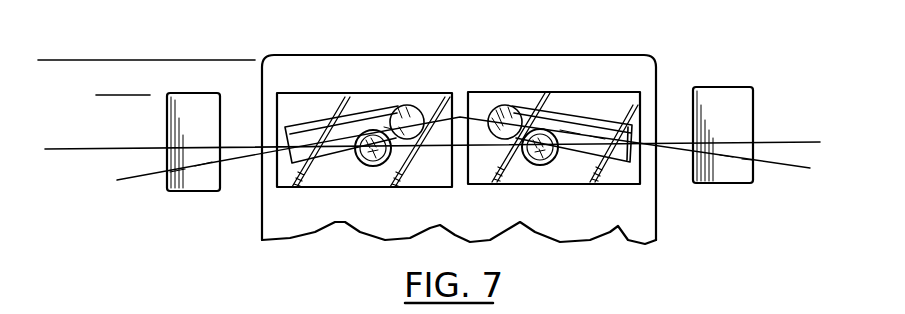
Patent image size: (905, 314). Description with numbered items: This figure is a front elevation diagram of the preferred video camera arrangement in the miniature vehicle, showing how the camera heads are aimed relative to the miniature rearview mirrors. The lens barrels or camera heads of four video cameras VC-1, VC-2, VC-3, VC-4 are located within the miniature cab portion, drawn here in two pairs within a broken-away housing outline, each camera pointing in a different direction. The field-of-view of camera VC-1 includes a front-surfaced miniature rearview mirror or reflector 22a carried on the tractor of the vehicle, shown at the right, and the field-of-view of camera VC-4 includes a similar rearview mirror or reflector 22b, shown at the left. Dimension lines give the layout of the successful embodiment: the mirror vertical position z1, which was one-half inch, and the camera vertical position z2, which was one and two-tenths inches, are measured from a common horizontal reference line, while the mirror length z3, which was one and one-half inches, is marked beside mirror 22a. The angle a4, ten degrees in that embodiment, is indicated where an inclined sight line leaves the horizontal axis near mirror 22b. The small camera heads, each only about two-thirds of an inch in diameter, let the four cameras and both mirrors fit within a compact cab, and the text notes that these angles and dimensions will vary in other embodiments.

The mirror vertical position z1 is at (110, 22).
The camera vertical position z2 is at (62, 71).
The mirror length z3 is at (782, 182).
The angle a4 is at (123, 118).
The rearview mirror or reflector 22a is at (735, 185).
The rearview mirror or reflector 22b is at (221, 192).
The video camera VC-1 is at (608, 170).
The video camera VC-2 is at (538, 168).
The video camera VC-3 is at (382, 168).
The video camera VC-4 is at (326, 160).